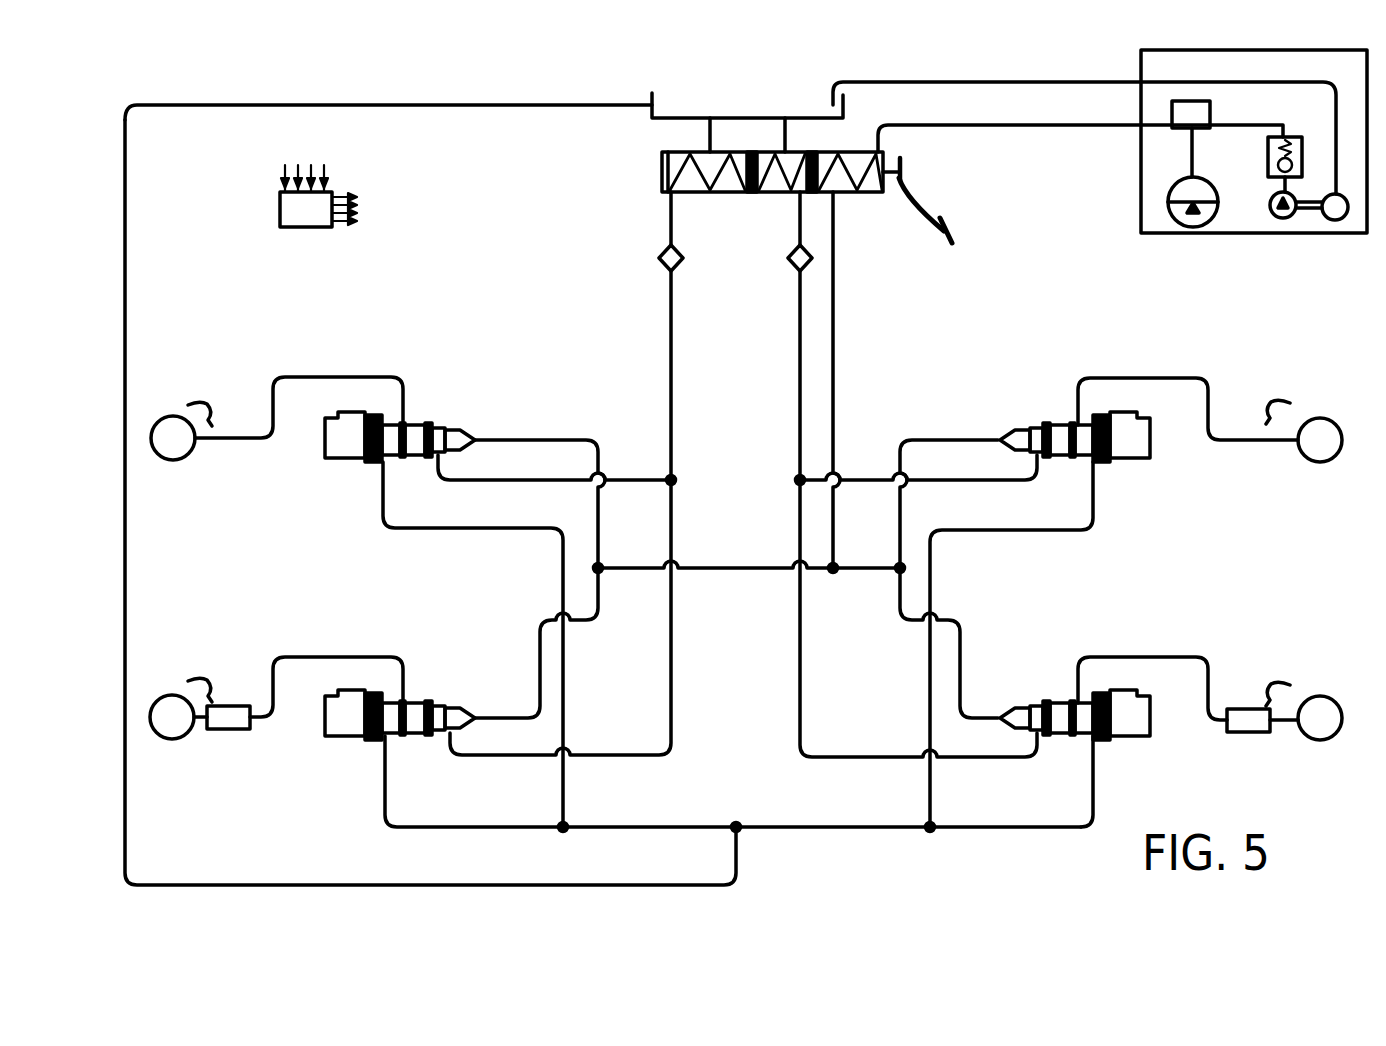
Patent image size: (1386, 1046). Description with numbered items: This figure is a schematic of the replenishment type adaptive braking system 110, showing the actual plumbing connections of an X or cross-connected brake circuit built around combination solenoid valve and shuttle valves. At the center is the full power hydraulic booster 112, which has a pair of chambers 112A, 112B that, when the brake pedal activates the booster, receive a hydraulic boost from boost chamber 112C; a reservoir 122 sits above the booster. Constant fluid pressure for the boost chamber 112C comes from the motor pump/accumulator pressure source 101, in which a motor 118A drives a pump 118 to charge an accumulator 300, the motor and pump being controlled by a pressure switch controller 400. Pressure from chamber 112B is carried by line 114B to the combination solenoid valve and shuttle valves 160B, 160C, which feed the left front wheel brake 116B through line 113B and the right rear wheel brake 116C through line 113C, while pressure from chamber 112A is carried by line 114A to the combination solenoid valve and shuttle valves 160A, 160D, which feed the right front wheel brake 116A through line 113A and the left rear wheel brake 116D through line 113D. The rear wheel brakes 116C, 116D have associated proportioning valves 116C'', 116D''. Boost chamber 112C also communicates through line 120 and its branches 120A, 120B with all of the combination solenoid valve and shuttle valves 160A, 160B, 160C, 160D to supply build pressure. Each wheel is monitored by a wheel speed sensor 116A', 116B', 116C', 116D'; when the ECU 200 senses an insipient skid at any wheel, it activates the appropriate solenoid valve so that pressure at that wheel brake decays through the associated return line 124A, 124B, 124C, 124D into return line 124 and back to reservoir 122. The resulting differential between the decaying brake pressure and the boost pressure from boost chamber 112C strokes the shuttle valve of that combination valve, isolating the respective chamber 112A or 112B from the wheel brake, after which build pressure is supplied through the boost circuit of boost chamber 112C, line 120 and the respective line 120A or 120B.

The replenishment type adaptive braking system 110 is at (368, 86).
The ECU 200 is at (318, 196).
The reservoir 122 is at (767, 115).
The hydraulic booster 112 is at (778, 186).
The chamber 112A is at (773, 193).
The chamber 112B is at (683, 194).
The boost chamber 112C is at (842, 192).
The line 114A is at (800, 302).
The line 114B is at (671, 300).
The line 120 is at (836, 288).
The pressure switch controller 400 is at (1212, 113).
The accumulator 300 is at (1197, 177).
The motor pump/accumulator pressure source 101 is at (1178, 235).
The pump 118 is at (1278, 220).
The motor 118A is at (1333, 221).
The line 113A is at (1138, 378).
The line 113B is at (335, 377).
The line 113C is at (335, 657).
The line 113D is at (1135, 657).
The right front wheel brake 116A is at (1327, 469).
The wheel speed sensor 116A' is at (1295, 386).
The left front wheel brake 116B is at (180, 463).
The wheel speed sensor 116B' is at (209, 388).
The right rear wheel brake 116C is at (185, 743).
The wheel speed sensor 116C' is at (217, 662).
The proportioning valve 116C'' is at (244, 763).
The left rear wheel brake 116D is at (1310, 744).
The wheel speed sensor 116D' is at (1296, 664).
The proportioning valve 116D'' is at (1259, 759).
The combination solenoid valve and shuttle valve 160A is at (1152, 455).
The combination solenoid valve and shuttle valve 160B is at (330, 458).
The combination solenoid valve and shuttle valve 160C is at (330, 737).
The combination solenoid valve and shuttle valve 160D is at (1150, 737).
The line 120A is at (902, 508).
The line 120B is at (598, 508).
The return line 124A is at (1097, 522).
The return line 124B is at (445, 528).
The return line 124C is at (383, 817).
The return line 124D is at (1095, 793).
The return line 124 is at (740, 858).